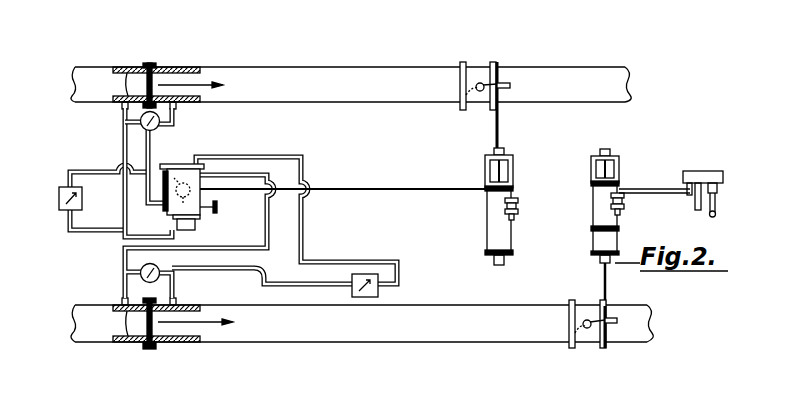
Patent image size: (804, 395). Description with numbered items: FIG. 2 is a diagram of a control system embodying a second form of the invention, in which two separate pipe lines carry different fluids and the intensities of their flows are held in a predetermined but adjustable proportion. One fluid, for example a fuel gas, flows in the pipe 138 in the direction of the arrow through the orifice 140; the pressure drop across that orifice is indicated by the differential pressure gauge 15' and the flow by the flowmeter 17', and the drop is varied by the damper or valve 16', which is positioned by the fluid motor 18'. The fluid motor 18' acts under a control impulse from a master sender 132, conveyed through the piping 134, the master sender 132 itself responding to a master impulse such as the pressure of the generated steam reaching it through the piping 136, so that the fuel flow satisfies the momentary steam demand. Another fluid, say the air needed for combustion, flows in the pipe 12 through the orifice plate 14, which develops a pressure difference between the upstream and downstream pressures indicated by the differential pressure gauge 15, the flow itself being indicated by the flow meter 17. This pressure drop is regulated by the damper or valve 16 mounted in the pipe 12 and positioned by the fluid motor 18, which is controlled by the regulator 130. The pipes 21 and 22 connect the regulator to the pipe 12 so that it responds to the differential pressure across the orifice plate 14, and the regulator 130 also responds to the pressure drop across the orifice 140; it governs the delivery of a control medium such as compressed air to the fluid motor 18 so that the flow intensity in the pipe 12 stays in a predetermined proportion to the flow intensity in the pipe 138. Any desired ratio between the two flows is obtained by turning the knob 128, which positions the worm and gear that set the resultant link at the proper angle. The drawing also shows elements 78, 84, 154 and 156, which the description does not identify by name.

The pipe line 12 is at (290, 72).
The orifice plate 14 is at (153, 66).
The damper or valve 16 is at (485, 88).
The flow meter 17 is at (85, 197).
The fluid motor 18 is at (480, 206).
The pipe 21 is at (122, 148).
The pipe 22 is at (177, 122).
The differential pressure gauge 15 is at (138, 143).
The connecting rod 78 is at (341, 188).
The outlet connection 84 is at (214, 228).
The knob 128 is at (218, 207).
The regulator 130 is at (205, 164).
The master sender 132 is at (700, 171).
The piping 134 is at (641, 190).
The piping 136 is at (708, 205).
The pipe 138 is at (268, 344).
The orifice 140 is at (145, 346).
The pressure conduit loop 154 is at (305, 238).
The pressure gauge 156 is at (122, 272).
The differential pressure gauge 15' is at (191, 273).
The damper or valve 16' is at (581, 305).
The flowmeter 17' is at (392, 278).
The fluid motor 18' is at (587, 227).